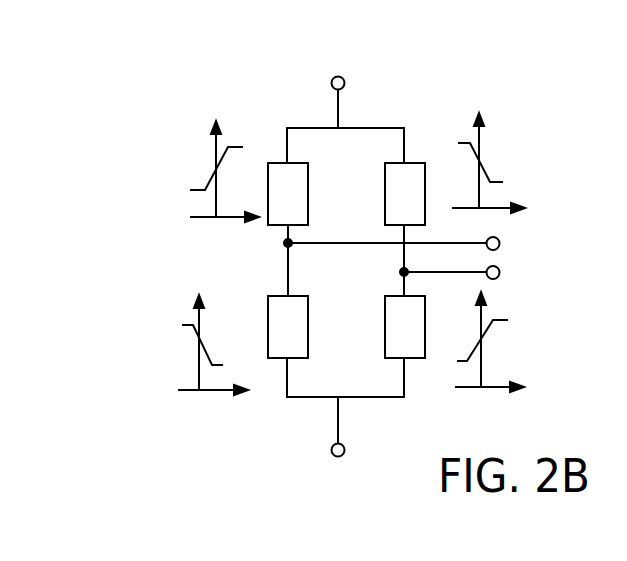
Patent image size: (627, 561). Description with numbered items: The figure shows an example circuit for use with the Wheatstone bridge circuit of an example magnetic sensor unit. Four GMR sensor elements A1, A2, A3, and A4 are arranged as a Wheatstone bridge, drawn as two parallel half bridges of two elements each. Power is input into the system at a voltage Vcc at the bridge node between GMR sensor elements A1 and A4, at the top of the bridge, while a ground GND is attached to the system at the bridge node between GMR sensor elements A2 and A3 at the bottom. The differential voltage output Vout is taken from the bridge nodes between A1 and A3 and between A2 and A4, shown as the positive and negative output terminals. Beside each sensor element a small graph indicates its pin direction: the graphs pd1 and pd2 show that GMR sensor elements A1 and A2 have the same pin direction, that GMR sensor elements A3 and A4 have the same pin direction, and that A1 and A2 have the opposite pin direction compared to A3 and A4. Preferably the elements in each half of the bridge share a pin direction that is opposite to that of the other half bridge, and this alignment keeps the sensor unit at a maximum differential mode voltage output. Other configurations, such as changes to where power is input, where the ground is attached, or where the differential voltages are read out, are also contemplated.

The pin direction graph pd1 is at (555, 347).
The pin direction graph pd2 is at (497, 159).
The GMR sensor element A1 is at (288, 194).
The GMR sensor element A2 is at (405, 327).
The GMR sensor element A3 is at (288, 327).
The GMR sensor element A4 is at (405, 194).
The voltage Vcc is at (333, 87).
The ground GND is at (339, 442).
The differential voltage output Vout is at (421, 258).